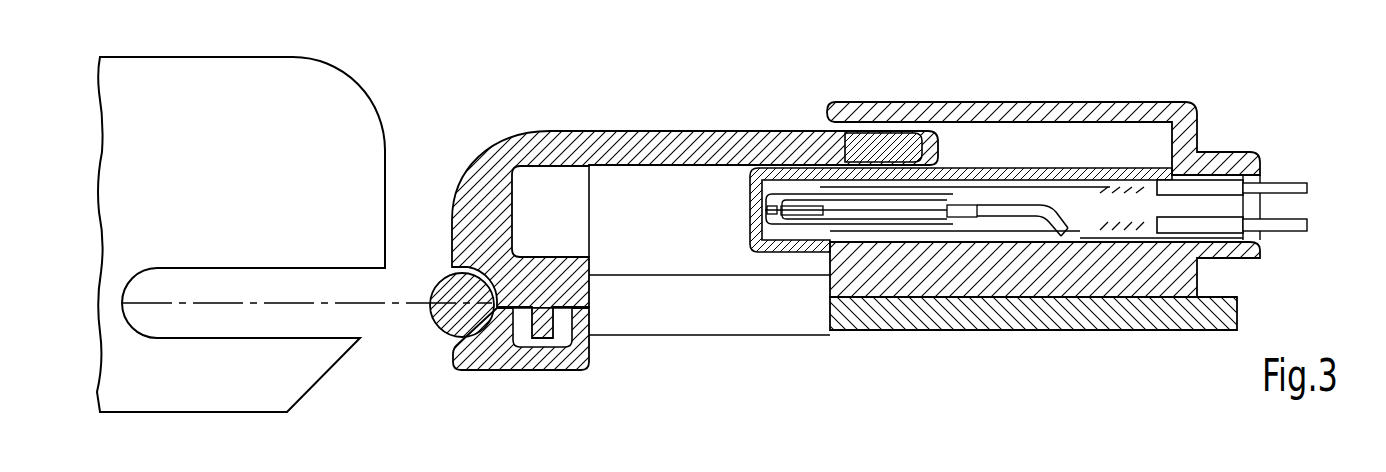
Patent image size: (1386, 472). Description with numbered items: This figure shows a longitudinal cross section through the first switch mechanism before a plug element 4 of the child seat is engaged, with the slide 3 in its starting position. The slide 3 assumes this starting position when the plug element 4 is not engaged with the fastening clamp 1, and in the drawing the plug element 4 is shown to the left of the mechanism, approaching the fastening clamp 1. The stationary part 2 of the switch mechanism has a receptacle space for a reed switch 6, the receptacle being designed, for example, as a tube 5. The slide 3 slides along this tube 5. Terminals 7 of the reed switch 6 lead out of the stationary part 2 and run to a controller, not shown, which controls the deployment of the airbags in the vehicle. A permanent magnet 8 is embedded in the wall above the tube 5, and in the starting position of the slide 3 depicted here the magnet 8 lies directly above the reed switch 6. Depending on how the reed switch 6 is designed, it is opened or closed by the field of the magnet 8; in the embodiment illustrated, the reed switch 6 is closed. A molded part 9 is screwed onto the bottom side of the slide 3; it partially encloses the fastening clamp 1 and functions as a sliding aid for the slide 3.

The fastening clamp 1 is at (448, 318).
The stationary part 2 is at (1102, 108).
The slide 3 is at (635, 132).
The plug element 4 is at (350, 115).
The tube 5 is at (748, 230).
The reed switch 6 is at (820, 222).
The terminals 7 is at (1307, 186).
The permanent magnet 8 is at (905, 130).
The molded part 9 is at (577, 357).